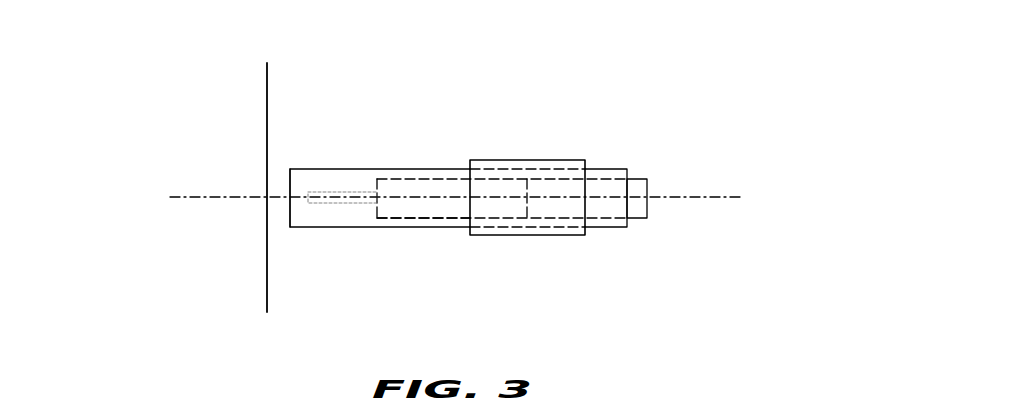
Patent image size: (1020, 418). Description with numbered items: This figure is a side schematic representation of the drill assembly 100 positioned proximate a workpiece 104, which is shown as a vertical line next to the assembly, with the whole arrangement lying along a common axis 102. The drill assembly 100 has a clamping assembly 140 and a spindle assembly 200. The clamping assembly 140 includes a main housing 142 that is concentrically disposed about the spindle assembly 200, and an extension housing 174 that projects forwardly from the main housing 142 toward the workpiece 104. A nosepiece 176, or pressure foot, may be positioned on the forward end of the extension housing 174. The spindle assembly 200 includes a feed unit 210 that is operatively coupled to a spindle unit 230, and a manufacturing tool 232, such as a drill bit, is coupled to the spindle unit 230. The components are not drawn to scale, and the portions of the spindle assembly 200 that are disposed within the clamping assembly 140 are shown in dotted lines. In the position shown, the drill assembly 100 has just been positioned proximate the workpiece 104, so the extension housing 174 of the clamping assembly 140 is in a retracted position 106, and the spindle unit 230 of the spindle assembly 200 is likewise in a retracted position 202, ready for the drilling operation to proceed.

The drill assembly 100 is at (708, 40).
The longitudinal axis 102 is at (190, 200).
The workpiece 104 is at (267, 103).
The retracted position 106 is at (425, 126).
The clamping assembly 140 is at (391, 51).
The main housing 142 is at (533, 160).
The extension housing 174 is at (440, 168).
The nosepiece 176 is at (293, 169).
The spindle assembly 200 is at (662, 144).
The retracted position 202 is at (528, 248).
The feed unit 210 is at (639, 218).
The spindle unit 230 is at (416, 218).
The manufacturing tool 232 is at (323, 200).